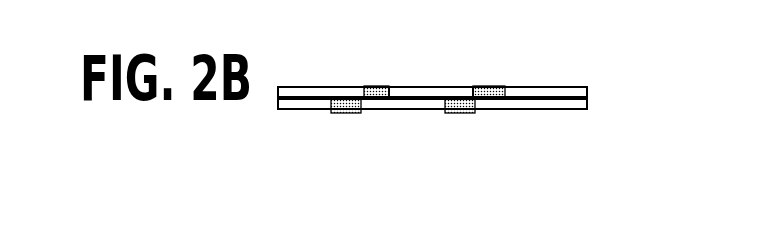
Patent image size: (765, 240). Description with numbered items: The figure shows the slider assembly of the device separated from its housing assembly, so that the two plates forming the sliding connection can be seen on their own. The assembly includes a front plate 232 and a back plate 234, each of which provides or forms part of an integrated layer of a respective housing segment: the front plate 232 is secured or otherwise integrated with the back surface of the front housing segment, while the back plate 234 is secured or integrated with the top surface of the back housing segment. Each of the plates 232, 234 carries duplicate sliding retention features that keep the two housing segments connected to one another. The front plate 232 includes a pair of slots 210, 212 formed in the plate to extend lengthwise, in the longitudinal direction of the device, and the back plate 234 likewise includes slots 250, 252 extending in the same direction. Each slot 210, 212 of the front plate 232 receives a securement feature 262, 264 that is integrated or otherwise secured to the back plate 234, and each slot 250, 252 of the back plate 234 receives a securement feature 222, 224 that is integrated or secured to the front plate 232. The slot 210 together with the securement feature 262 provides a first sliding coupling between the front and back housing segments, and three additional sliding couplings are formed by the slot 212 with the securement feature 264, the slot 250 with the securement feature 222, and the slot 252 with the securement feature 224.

The slot 210 is at (388, 87).
The slot 212 is at (500, 86).
The securement feature 222 is at (343, 113).
The securement feature 224 is at (457, 113).
The front plate 232 is at (428, 87).
The back plate 234 is at (540, 110).
The slot 250 is at (361, 113).
The slot 252 is at (473, 113).
The securement feature 262 is at (370, 86).
The securement feature 264 is at (482, 86).